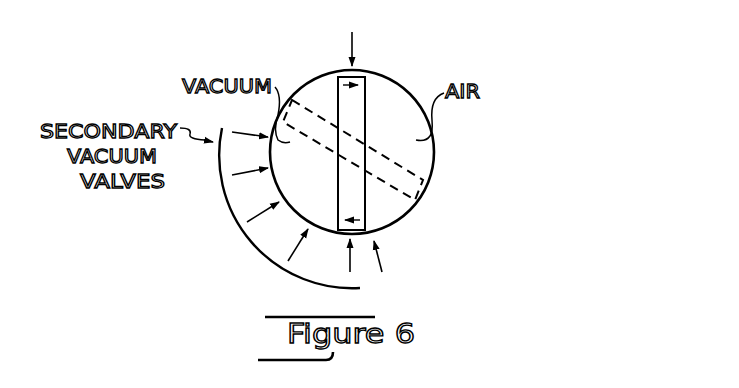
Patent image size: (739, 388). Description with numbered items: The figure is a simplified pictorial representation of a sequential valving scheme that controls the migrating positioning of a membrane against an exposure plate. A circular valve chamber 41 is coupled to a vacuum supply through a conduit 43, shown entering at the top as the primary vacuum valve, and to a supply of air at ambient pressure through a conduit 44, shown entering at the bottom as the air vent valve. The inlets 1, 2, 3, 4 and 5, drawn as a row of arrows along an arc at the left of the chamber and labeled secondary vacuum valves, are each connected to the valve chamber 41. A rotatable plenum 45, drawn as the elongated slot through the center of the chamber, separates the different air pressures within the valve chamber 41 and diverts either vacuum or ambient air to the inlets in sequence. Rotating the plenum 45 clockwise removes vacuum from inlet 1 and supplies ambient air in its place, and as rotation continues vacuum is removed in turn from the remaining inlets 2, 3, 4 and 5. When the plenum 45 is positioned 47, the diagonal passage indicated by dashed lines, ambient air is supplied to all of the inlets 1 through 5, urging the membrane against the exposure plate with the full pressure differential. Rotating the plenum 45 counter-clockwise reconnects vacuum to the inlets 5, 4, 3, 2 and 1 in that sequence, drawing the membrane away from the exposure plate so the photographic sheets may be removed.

The valve chamber 41 is at (310, 187).
The conduit 43 is at (351, 42).
The conduit 44 is at (380, 252).
The rotatable plenum 45 is at (349, 153).
The plenum position 47 is at (283, 118).
The inlet 1 is at (341, 256).
The inlet 2 is at (292, 245).
The inlet 3 is at (261, 207).
The inlet 4 is at (250, 163).
The inlet 5 is at (250, 123).